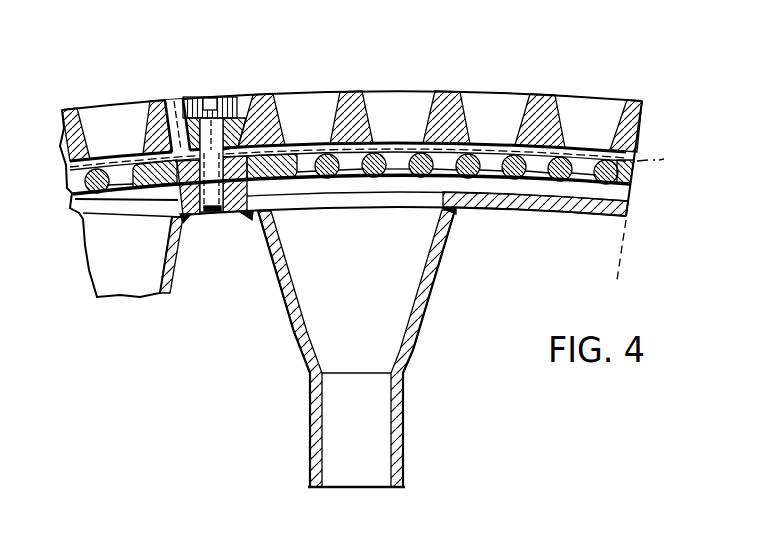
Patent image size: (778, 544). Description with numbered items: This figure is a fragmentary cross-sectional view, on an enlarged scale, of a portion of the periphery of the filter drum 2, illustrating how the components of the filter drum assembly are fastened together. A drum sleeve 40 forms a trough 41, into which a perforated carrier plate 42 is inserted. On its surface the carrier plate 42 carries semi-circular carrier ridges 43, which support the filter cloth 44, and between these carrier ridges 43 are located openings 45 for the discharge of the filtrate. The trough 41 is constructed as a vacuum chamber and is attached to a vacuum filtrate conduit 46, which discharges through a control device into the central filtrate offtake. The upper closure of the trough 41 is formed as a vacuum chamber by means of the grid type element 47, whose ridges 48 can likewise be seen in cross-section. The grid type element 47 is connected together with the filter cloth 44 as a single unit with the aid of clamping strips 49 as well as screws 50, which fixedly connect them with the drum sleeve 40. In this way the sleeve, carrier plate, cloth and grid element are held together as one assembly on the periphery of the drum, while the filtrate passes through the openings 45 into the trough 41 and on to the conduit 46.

The filter drum 2 is at (250, 334).
The drum sleeve 40 is at (572, 204).
The trough 41 is at (487, 184).
The perforated carrier plate 42 is at (313, 181).
The carrier ridges 43 is at (408, 172).
The filter cloth 44 is at (656, 160).
The openings 45 is at (397, 170).
The vacuum filtrate conduit 46 is at (398, 310).
The grid type element 47 is at (505, 77).
The ridges 48 is at (273, 96).
The clamping strips 49 is at (171, 108).
The screws 50 is at (223, 94).